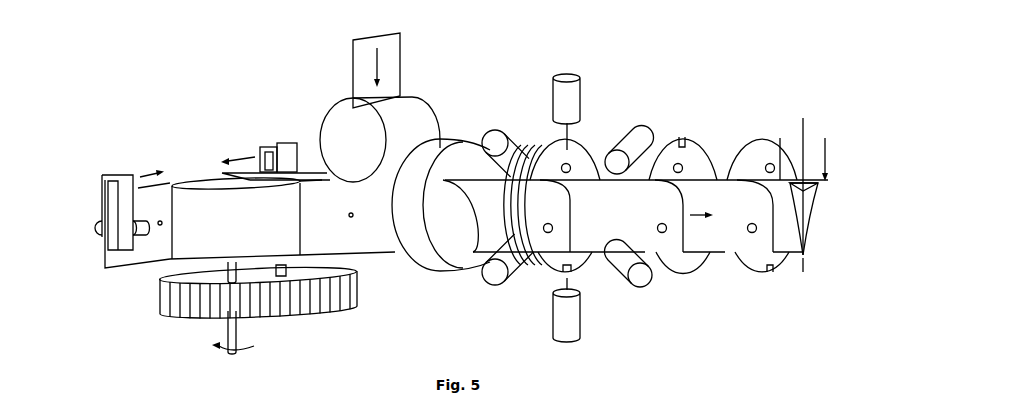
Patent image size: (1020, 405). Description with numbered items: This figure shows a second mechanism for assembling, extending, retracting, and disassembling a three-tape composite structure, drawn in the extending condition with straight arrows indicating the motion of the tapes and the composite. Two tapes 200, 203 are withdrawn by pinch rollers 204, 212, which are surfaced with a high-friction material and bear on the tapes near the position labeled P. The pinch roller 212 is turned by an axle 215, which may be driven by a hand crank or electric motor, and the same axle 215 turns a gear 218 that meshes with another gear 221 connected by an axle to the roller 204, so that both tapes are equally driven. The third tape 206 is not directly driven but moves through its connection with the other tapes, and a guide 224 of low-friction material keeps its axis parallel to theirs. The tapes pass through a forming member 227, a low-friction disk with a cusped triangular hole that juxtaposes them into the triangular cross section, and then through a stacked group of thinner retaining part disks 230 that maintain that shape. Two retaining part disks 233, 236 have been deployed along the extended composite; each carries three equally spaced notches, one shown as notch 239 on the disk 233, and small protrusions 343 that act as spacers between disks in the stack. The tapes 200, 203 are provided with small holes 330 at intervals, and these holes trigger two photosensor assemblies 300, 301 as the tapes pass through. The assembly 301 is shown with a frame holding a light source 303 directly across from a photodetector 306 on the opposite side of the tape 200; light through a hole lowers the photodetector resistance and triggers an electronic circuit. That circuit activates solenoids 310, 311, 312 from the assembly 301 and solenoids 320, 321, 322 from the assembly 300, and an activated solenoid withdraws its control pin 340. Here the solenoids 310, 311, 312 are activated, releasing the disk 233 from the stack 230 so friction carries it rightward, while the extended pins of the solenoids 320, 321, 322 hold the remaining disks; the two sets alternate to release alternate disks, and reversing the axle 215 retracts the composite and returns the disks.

The tape 200 is at (110, 268).
The tape 203 is at (268, 150).
The pinch roller 204 is at (302, 178).
The tape 206 is at (393, 63).
The pinch roller 212 is at (194, 183).
The axle 215 is at (232, 262).
The gear 218 is at (163, 312).
The gear 221 is at (358, 290).
The guide 224 is at (425, 118).
The forming member 227 is at (438, 271).
The retaining part disk stack 230 is at (536, 142).
The retaining part disk 233 is at (688, 273).
The retaining part disk 236 is at (753, 273).
The notch 239 is at (682, 138).
The photosensor assembly 300 is at (283, 143).
The photosensor assembly 301 is at (118, 175).
The light source 303 is at (97, 221).
The photodetector 306 is at (137, 221).
The solenoid 310 is at (497, 143).
The solenoid 311 is at (640, 133).
The solenoid 312 is at (554, 327).
The solenoid 320 is at (565, 75).
The solenoid 321 is at (495, 285).
The solenoid 322 is at (637, 287).
The small holes 330 is at (163, 223).
The control pin 340 is at (569, 130).
The protrusions 343 is at (548, 223).